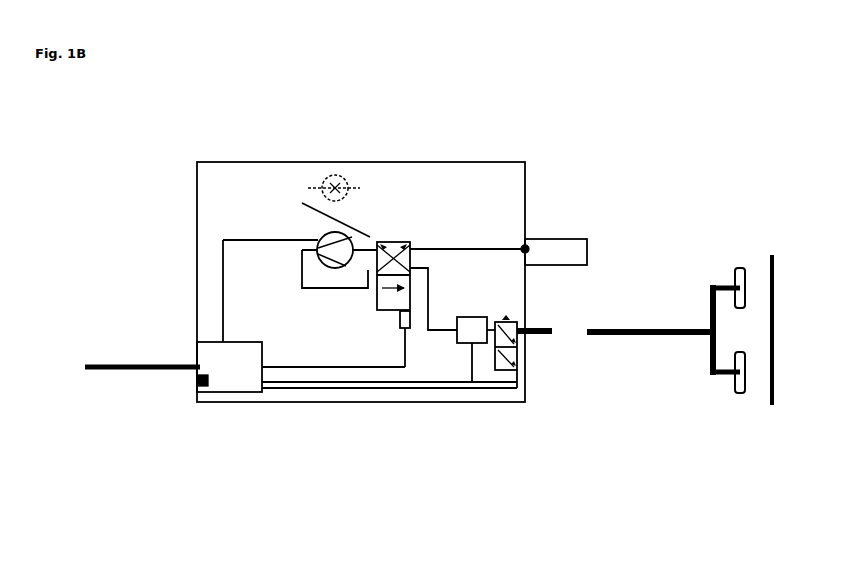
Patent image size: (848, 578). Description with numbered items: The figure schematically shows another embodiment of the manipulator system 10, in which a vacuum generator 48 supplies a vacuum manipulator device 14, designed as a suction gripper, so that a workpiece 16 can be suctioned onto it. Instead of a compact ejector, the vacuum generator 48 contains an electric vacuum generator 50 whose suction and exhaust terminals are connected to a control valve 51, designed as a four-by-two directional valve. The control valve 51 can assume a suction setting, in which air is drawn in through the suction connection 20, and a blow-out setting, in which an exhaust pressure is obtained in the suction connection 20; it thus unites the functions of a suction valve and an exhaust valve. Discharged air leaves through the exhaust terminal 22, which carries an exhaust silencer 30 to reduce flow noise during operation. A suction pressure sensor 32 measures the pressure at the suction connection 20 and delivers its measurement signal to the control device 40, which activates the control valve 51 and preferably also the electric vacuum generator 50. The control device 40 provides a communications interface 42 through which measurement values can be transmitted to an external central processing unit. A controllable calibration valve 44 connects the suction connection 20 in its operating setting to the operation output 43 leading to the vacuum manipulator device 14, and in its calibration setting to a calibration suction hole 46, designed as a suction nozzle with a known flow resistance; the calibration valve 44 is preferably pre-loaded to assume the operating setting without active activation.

The manipulator system 10 is at (549, 127).
The vacuum manipulator device 14 is at (767, 201).
The workpiece 16 is at (774, 383).
The suction connection 20 is at (492, 318).
The exhaust terminal 22 is at (529, 249).
The exhaust silencer 30 is at (575, 250).
The suction pressure sensor 32 is at (467, 343).
The control device 40 is at (223, 372).
The communications interface 42 is at (200, 382).
The operation output 43 is at (552, 335).
The calibration valve 44 is at (512, 330).
The calibration suction hole 46 is at (520, 338).
The vacuum generator 48 is at (176, 156).
The electric vacuum generator 50 is at (318, 240).
The control valve 51 is at (393, 241).